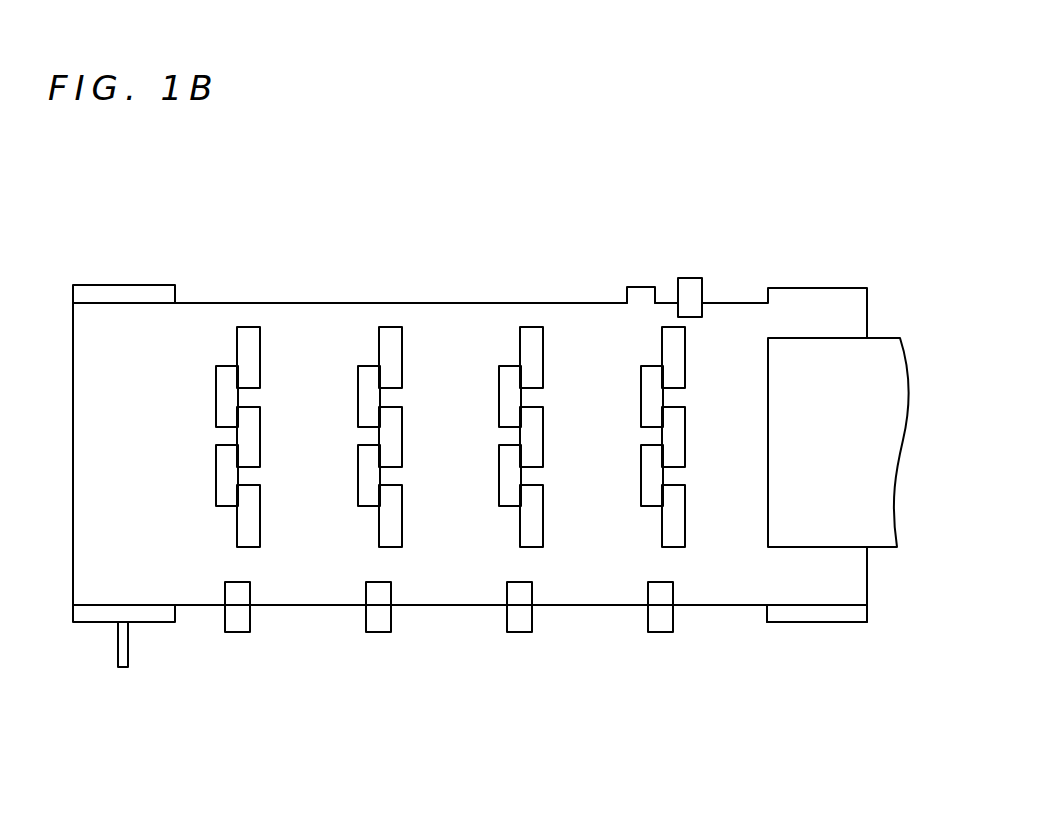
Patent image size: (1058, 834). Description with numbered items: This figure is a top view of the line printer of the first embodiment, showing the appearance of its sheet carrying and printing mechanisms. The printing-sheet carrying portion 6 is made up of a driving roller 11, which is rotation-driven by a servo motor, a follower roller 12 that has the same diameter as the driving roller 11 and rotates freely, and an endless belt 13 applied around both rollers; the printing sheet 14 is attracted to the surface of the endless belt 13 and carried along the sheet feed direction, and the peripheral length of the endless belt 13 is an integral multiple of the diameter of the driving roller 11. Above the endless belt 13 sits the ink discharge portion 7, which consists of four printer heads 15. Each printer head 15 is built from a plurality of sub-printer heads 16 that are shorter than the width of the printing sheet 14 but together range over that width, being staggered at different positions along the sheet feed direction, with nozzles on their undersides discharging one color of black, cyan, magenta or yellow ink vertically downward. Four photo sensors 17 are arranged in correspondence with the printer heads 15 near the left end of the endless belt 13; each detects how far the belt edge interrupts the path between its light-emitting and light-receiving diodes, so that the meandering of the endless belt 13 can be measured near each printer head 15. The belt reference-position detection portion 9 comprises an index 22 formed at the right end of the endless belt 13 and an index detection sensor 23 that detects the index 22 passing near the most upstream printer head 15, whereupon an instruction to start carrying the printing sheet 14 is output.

The printing-sheet carrying portion 6 is at (787, 703).
The ink discharge portion 7 is at (705, 340).
The belt reference-position detection portion 9 is at (698, 213).
The driving roller 11 is at (160, 622).
The follower roller 12 is at (780, 622).
The endless belt 13 is at (587, 595).
The printing sheet 14 is at (888, 338).
The printer head 15 is at (205, 388).
The sub-printer head 16 is at (216, 483).
The photo sensor 17 is at (238, 632).
The index 22 is at (640, 287).
The index detection sensor 23 is at (690, 278).